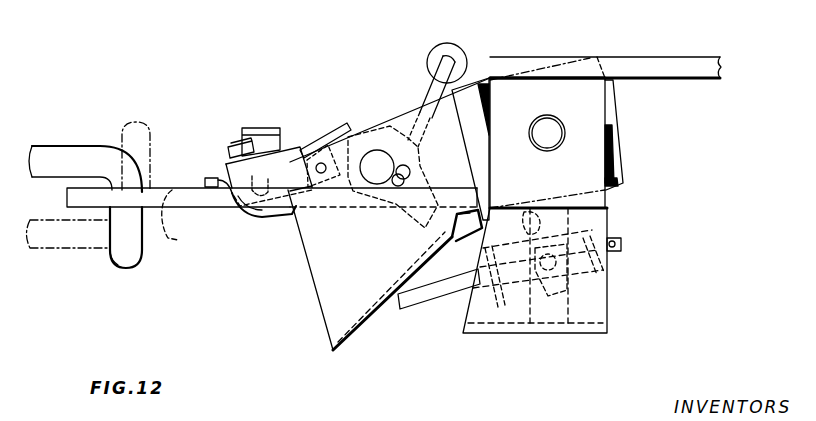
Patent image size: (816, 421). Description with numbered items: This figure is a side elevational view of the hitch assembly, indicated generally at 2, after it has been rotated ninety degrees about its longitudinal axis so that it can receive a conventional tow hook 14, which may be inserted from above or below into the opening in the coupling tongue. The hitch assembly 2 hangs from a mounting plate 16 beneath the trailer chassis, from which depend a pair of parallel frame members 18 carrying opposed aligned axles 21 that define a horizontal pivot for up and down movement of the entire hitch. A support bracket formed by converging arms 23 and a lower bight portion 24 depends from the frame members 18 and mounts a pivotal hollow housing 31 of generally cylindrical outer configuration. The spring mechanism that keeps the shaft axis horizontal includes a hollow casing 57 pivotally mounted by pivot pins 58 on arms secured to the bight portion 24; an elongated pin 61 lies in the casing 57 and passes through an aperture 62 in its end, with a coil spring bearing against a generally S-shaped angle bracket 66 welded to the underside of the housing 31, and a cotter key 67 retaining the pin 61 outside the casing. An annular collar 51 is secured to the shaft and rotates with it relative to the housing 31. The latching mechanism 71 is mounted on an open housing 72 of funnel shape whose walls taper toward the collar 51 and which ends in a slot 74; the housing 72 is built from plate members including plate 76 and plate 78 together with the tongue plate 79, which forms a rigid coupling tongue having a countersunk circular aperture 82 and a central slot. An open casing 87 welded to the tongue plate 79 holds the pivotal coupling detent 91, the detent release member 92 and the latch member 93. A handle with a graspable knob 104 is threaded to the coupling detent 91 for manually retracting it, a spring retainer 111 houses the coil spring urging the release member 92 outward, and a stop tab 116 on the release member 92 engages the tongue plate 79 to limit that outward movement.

The direction of movement 2 is at (337, 354).
The tow hook 14 is at (70, 150).
The mounting plate 16 is at (672, 62).
The frame members 18 is at (592, 124).
The axles 21 is at (540, 116).
The converging arms 23 is at (600, 318).
The lower bight portion 24 is at (570, 333).
The pivotal hollow housing 31 is at (616, 184).
The annular collar 51 is at (472, 88).
The hollow casing 57 is at (588, 288).
The pivot pins 58 is at (525, 332).
The elongated pin 61 is at (448, 298).
The aperture 62 is at (624, 250).
The S-shaped angle bracket 66 is at (530, 210).
The cotter key 67 is at (616, 240).
The latching mechanism 71 is at (357, 136).
The open housing 72 is at (330, 258).
The slot 74 is at (474, 238).
The plate member 76 is at (370, 270).
The plate member 78 is at (366, 328).
The tongue plate 79 is at (168, 188).
The circular aperture 82 is at (168, 240).
The open casing 87 is at (287, 142).
The coupling detent member 91 is at (390, 130).
The detent release member 92 is at (268, 220).
The latch member 93 is at (332, 125).
The graspable knob 104 is at (446, 44).
The spring retainer 111 is at (265, 127).
The stop tab 116 is at (224, 178).